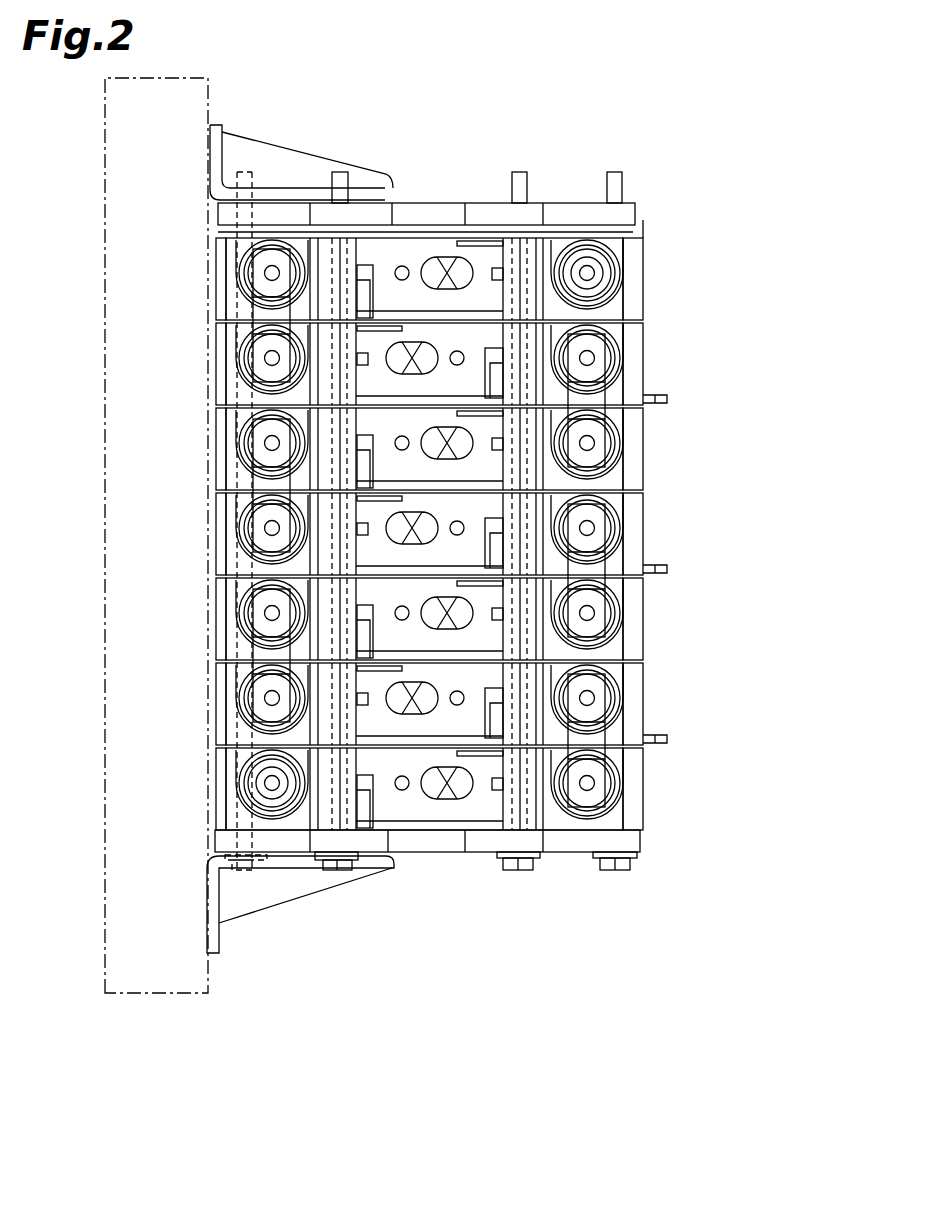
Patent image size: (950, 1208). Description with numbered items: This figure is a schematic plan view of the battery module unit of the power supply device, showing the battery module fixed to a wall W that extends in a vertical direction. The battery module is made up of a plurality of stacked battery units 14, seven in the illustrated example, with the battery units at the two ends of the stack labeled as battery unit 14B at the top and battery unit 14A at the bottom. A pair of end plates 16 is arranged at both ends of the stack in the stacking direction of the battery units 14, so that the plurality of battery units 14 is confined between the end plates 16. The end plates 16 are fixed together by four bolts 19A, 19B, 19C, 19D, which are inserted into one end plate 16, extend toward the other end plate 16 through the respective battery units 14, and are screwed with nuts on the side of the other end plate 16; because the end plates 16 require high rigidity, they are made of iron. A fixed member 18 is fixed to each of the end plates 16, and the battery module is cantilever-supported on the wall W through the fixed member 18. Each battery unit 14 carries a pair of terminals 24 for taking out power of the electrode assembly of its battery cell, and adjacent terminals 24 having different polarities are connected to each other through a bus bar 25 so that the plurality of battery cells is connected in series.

The wall W is at (130, 995).
The battery unit 14 is at (660, 352).
The battery unit 14A is at (660, 777).
The battery unit 14B is at (660, 267).
The end plate 16 is at (577, 200).
The fixed member 18 is at (222, 162).
The bolt 19A is at (345, 872).
The bolt 19B is at (518, 872).
The bolt 19C is at (255, 876).
The bolt 19D is at (615, 872).
The terminal 24 is at (250, 254).
The bus bar 25 is at (262, 318).